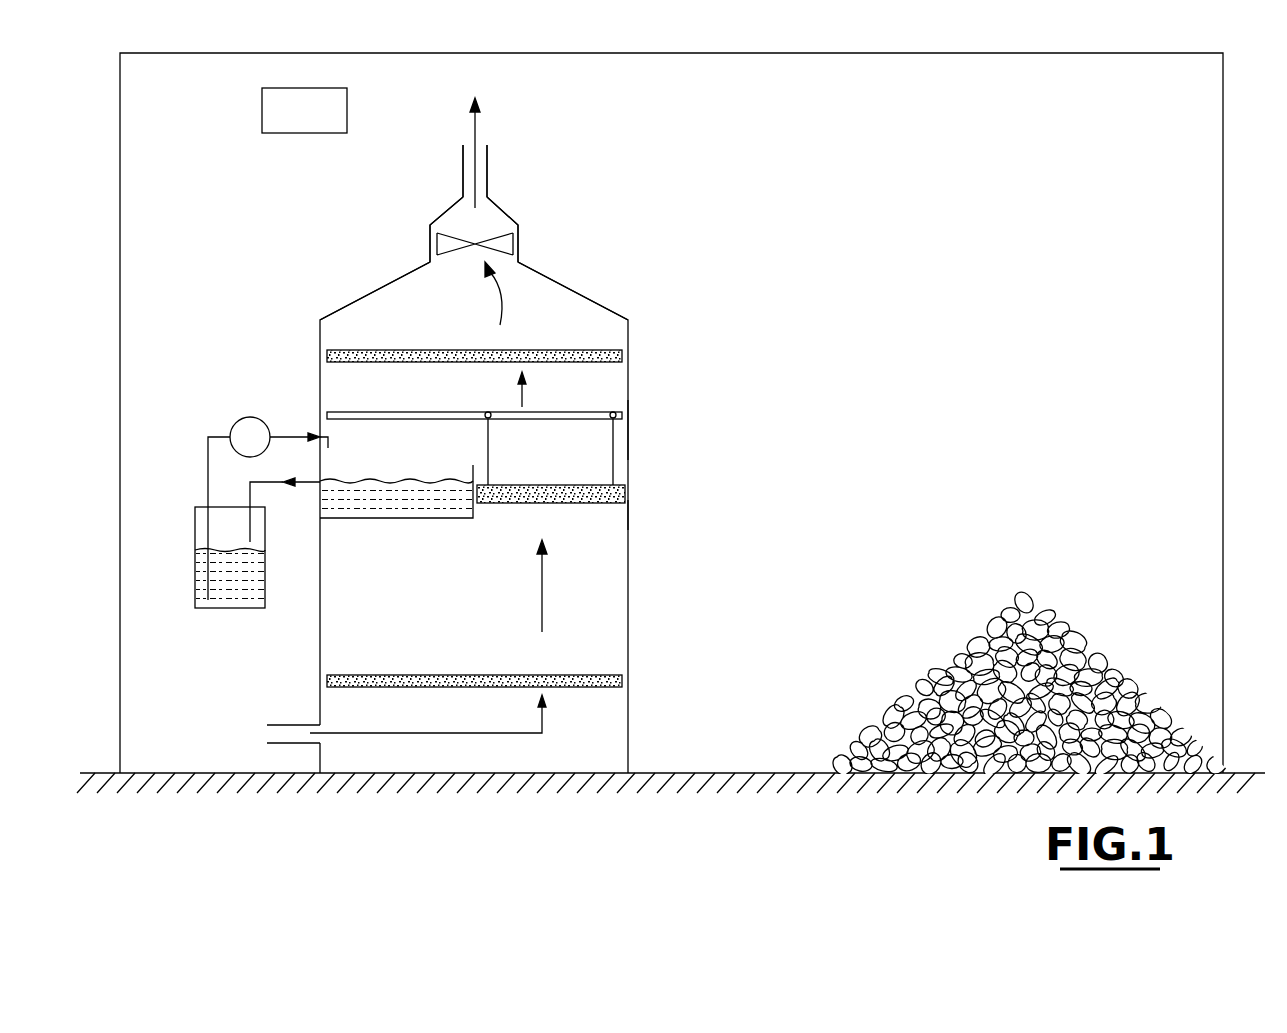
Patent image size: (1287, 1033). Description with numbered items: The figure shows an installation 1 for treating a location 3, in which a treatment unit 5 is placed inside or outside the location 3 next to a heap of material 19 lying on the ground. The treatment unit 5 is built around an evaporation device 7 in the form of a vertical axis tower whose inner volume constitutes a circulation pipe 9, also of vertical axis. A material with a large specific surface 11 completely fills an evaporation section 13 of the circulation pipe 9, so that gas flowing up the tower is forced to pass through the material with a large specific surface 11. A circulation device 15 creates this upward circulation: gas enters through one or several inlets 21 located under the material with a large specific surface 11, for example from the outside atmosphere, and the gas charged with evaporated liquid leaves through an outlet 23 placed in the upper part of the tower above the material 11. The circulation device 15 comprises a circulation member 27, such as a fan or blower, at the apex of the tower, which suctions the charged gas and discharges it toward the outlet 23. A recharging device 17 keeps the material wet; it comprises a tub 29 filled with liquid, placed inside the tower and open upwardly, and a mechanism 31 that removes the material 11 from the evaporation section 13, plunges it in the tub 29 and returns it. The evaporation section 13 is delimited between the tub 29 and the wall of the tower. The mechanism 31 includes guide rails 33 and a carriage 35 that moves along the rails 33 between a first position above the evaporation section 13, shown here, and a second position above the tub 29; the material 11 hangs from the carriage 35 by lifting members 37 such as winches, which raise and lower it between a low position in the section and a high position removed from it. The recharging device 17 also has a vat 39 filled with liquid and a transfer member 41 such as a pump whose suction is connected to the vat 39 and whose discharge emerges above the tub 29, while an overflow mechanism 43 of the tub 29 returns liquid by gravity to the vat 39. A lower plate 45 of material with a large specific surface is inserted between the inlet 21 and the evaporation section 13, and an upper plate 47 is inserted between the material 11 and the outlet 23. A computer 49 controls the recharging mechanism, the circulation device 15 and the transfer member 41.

The gas treatment installation 1 is at (235, 200).
The location 3 is at (1223, 188).
The treatment unit 5 is at (277, 311).
The evaporation device 7 is at (646, 318).
The circulation pipe 9 is at (612, 643).
The material with a large specific surface 11 is at (628, 497).
The evaporation section 13 is at (628, 510).
The circulation device 15 is at (541, 234).
The recharging device 17 is at (201, 411).
The heap of material 19 is at (1040, 590).
The inlet 21 is at (300, 725).
The outlet 23 is at (470, 175).
The circulation member 27 is at (437, 246).
The tub 29 is at (358, 518).
The mechanism 31 is at (645, 420).
The guide rails 33 is at (363, 396).
The carriage 35 is at (565, 419).
The lifting members 37 is at (613, 412).
The vat 39 is at (195, 522).
The transfer member 41 is at (243, 415).
The overflow mechanism 43 is at (320, 474).
The lower plate 45 is at (630, 682).
The upper plate 47 is at (628, 357).
The computer 49 is at (304, 110).